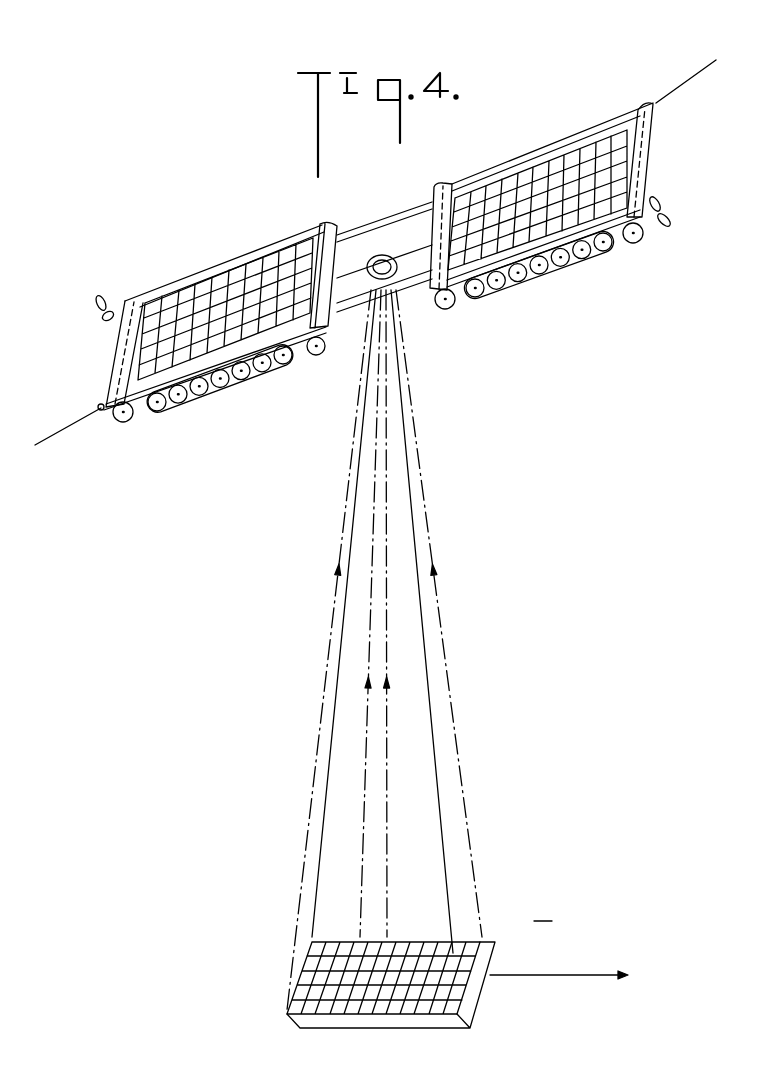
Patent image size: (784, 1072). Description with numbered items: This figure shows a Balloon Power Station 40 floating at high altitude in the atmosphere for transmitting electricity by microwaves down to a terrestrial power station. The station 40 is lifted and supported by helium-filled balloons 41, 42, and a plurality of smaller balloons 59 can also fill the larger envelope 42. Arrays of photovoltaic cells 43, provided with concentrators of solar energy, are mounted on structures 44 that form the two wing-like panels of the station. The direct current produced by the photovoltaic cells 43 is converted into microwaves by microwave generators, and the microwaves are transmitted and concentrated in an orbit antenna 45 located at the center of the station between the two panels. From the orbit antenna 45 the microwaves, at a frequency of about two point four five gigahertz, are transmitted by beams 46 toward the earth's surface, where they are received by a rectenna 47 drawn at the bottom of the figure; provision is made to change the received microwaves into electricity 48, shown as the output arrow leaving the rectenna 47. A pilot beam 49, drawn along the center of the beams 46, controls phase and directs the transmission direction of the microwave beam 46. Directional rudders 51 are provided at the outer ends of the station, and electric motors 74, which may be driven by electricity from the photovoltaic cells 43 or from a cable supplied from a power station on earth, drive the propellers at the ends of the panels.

The Balloon Power Station 40 is at (277, 247).
The balloon 41 is at (126, 422).
The balloon 42 is at (188, 278).
The arrays of photovoltaic cells 43 is at (218, 285).
The structure 44 is at (330, 224).
The orbit antenna 45 is at (392, 258).
The microwave beam 46 is at (323, 681).
The rectenna 47 is at (302, 1026).
The electricity 48 is at (563, 975).
The pilot beam 49 is at (388, 812).
The directional rudder 51 is at (52, 432).
The smaller balloons 59 is at (185, 403).
The electric motor 74 is at (100, 310).